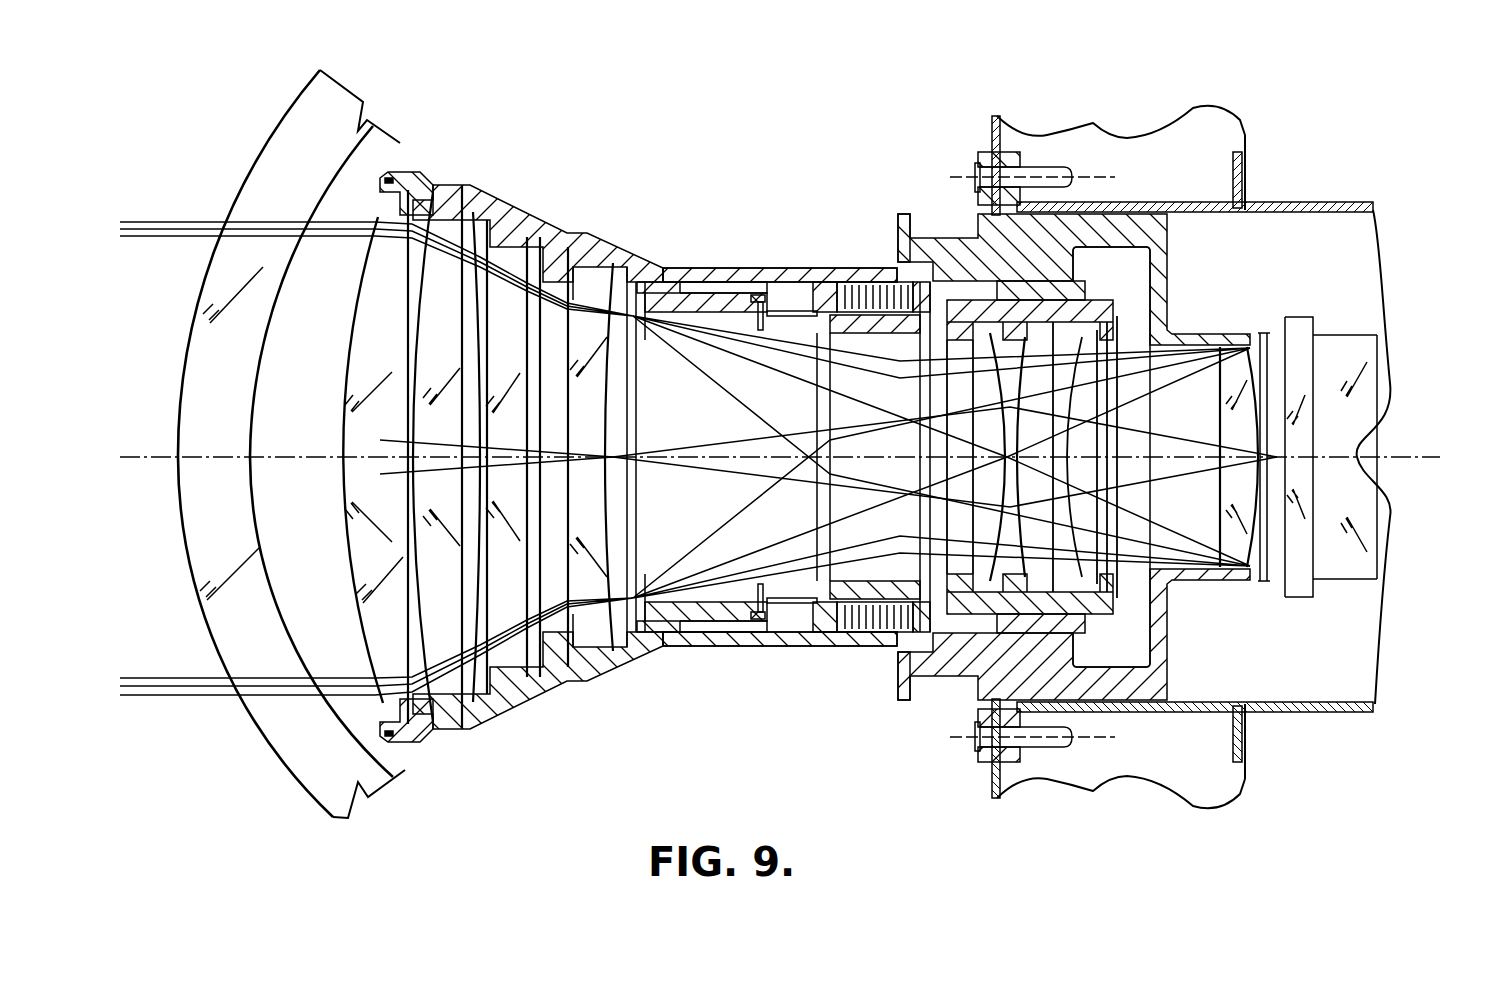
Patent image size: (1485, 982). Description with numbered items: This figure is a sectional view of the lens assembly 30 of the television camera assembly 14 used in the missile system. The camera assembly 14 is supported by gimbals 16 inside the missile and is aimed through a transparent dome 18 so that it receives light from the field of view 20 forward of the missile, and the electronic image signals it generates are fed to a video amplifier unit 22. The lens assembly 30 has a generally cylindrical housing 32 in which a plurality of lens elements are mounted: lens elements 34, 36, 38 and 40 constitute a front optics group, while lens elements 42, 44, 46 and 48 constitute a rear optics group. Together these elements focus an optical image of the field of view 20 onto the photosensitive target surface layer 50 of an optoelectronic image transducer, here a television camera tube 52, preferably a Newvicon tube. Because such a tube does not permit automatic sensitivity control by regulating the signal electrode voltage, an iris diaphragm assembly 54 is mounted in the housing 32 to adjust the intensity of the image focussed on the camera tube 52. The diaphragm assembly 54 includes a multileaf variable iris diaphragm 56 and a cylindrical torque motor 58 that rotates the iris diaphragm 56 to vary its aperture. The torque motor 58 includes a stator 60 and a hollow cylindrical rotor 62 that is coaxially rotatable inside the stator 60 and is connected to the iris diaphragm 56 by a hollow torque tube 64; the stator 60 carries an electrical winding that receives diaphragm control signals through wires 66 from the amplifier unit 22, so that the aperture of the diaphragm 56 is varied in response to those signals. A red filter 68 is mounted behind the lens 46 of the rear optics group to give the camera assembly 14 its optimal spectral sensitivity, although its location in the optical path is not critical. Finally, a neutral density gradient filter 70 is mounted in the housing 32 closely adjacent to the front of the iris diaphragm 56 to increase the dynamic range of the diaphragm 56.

The television camera assembly 14 is at (625, 99).
The gimbals 16 is at (1247, 130).
The transparent dome 18 is at (250, 165).
The field of view 20 is at (146, 222).
The video amplifier unit 22 is at (793, 292).
The lens assembly 30 is at (724, 159).
The housing 32 is at (587, 663).
The lens element 34 is at (410, 745).
The lens element 36 is at (515, 655).
The lens element 38 is at (525, 660).
The lens element 40 is at (605, 633).
The lens element 42 is at (975, 625).
The lens element 44 is at (1090, 595).
The lens element 46 is at (1085, 570).
The lens element 48 is at (1237, 580).
The photosensitive target surface layer 50 is at (1230, 575).
The television camera tube 52 is at (1340, 347).
The iris diaphragm assembly 54 is at (790, 693).
The multileaf variable iris diaphragm 56 is at (727, 298).
The cylindrical torque motor 58 is at (853, 656).
The stator 60 is at (857, 295).
The hollow cylindrical rotor 62 is at (863, 577).
The hollow torque tube 64 is at (783, 603).
The wires 66 is at (790, 252).
The red filter 68 is at (1110, 330).
The neutral density gradient filter 70 is at (627, 333).